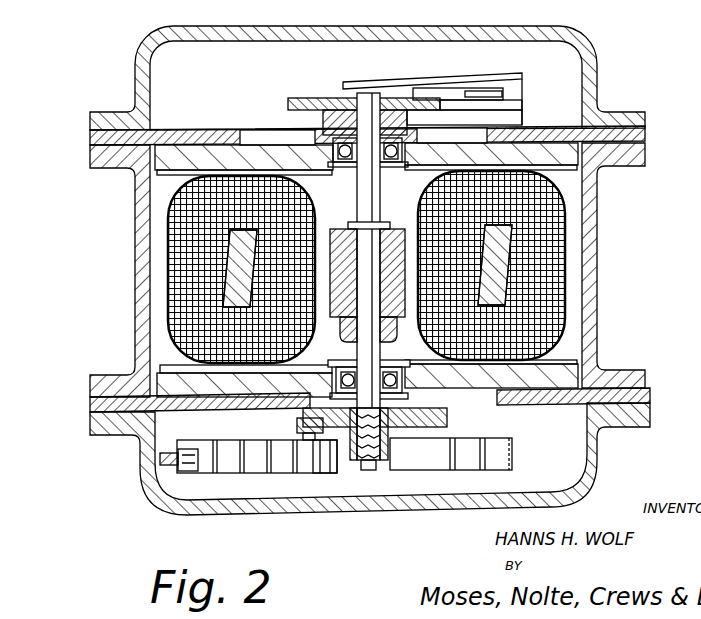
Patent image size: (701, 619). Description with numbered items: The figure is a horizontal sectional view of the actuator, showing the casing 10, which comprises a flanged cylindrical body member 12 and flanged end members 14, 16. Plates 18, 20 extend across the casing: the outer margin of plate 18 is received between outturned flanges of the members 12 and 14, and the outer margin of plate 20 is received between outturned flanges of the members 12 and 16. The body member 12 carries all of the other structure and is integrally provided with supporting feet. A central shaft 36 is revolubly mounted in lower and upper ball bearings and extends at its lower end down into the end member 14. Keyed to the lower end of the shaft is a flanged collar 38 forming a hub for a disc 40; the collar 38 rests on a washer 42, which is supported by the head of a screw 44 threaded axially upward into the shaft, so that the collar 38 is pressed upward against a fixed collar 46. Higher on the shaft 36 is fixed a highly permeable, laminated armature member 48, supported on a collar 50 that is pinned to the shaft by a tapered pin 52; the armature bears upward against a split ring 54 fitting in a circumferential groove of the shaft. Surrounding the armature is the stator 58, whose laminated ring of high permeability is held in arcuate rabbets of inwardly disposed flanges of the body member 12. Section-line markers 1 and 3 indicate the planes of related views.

The section line 1- 1 is at (90, 145).
The section line 3- 3 is at (190, 72).
The casing 10 is at (347, 274).
The flanged cylindrical body member 12 is at (606, 248).
The flanged end member 14 is at (293, 513).
The flanged end member 16 is at (393, 27).
The plate 18 is at (90, 407).
The plate 20 is at (87, 138).
The central shaft 36 is at (378, 194).
The flanged collar 38 is at (402, 408).
The disc 40 is at (320, 440).
The washer 42 is at (388, 467).
The screw 44 is at (378, 472).
The fixed collar 46 is at (358, 403).
The armature member 48 is at (333, 222).
The collar 50 is at (190, 472).
The tapered pin 52 is at (343, 330).
The split ring 54 is at (381, 227).
The stator 58 is at (160, 240).